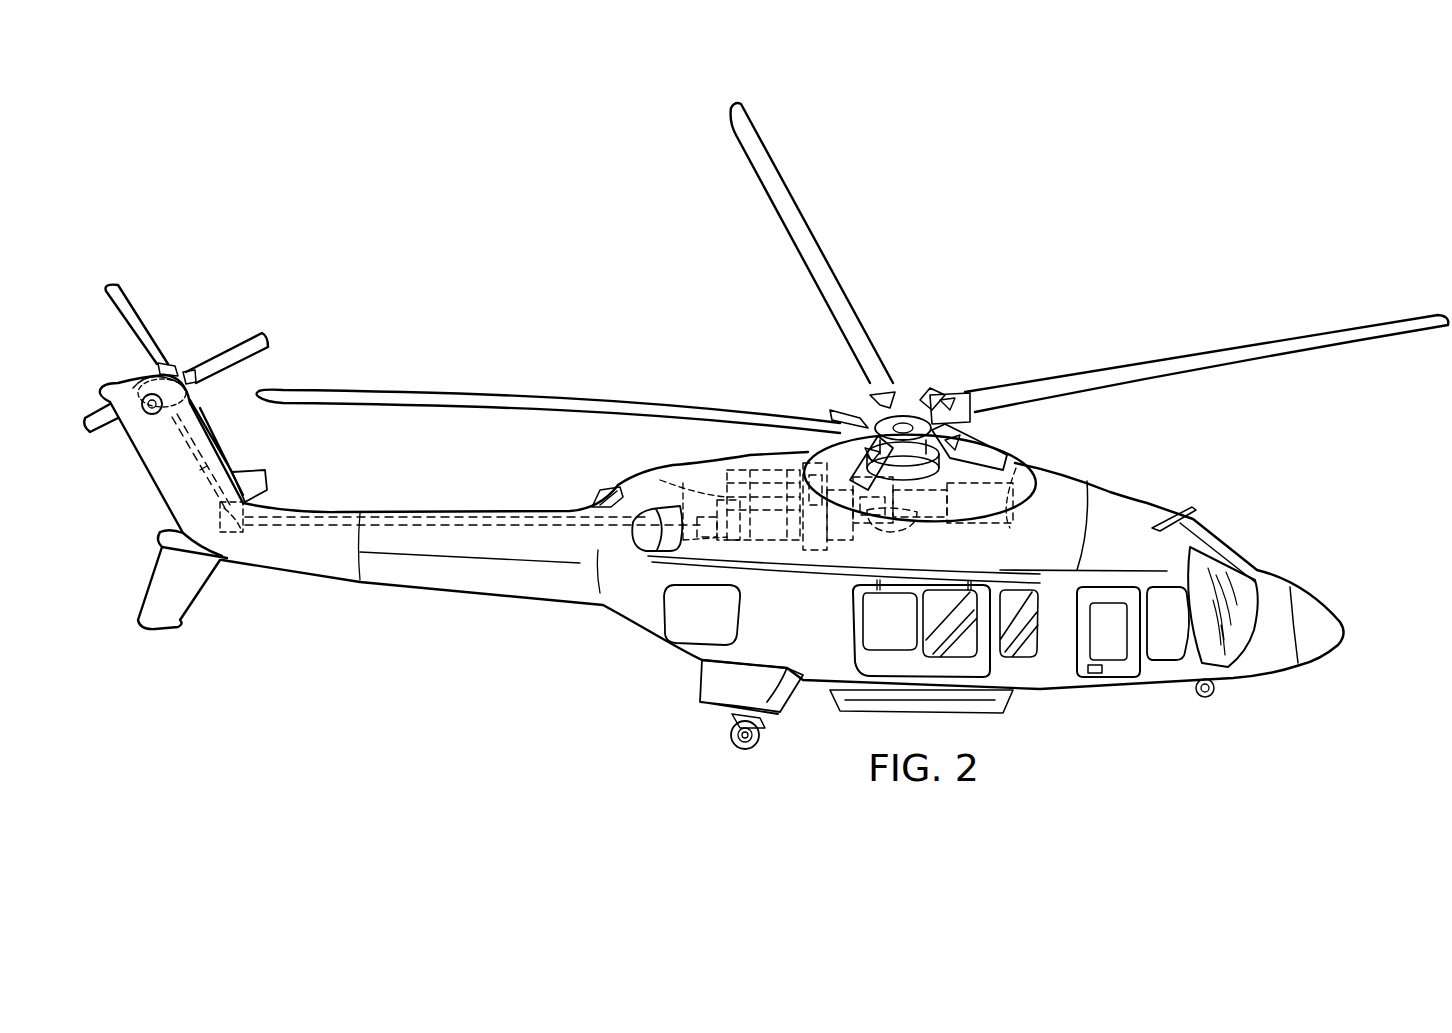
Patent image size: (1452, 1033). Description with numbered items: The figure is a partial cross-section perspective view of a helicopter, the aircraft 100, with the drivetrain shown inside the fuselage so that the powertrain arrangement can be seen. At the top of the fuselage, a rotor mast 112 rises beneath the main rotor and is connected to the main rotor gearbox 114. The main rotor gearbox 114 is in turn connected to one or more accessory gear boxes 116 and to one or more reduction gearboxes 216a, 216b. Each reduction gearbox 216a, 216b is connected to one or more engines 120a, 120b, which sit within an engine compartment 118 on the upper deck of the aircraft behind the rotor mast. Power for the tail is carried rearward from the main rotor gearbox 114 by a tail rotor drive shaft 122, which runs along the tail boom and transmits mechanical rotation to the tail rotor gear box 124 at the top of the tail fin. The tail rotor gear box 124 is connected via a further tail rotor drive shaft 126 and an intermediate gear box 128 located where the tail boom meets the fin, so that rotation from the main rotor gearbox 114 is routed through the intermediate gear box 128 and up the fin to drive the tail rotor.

The aircraft 100 is at (1138, 150).
The rotor mast 112 is at (868, 520).
The main rotor gearbox 114 is at (907, 525).
The accessory gear box 116 is at (1000, 532).
The engine compartment 118 is at (784, 440).
The engine 120a is at (750, 535).
The engine 120b is at (745, 462).
The tail rotor drive shaft 122 is at (447, 515).
The tail rotor gear box 124 is at (147, 382).
The tail rotor drive shaft 126 is at (217, 460).
The intermediate gear box 128 is at (226, 532).
The reduction gearbox 216a is at (807, 532).
The reduction gearbox 216b is at (807, 468).